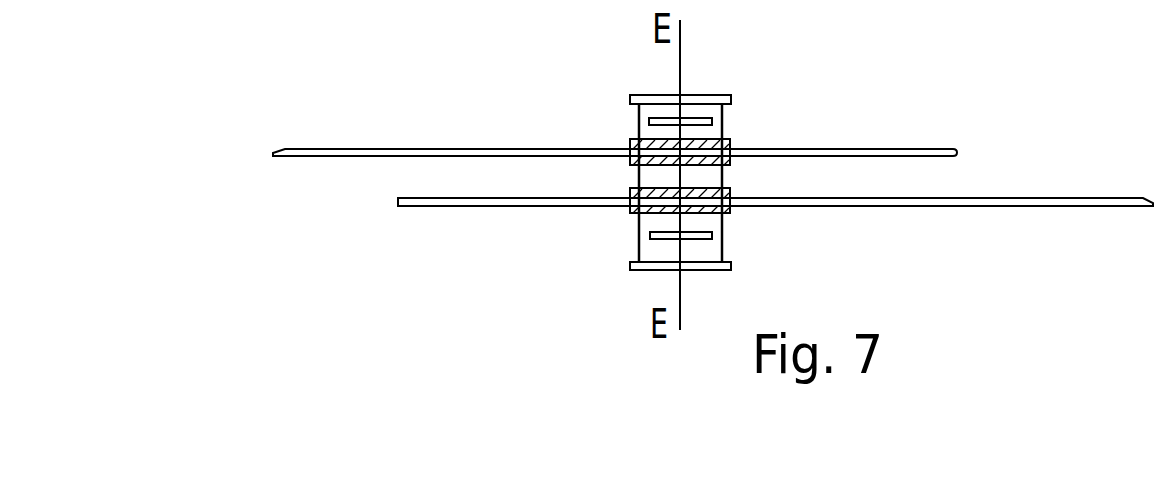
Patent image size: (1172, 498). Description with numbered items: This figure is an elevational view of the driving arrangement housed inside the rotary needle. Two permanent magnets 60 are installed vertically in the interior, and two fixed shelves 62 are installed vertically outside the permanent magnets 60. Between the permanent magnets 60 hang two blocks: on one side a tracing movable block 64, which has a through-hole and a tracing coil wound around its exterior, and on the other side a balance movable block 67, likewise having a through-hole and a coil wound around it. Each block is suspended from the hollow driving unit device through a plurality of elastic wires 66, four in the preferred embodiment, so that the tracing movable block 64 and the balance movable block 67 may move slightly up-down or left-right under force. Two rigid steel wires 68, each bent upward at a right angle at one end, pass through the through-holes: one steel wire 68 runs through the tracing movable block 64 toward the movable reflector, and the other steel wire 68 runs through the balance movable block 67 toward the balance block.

The permanent magnet 60 is at (712, 122).
The fixed shelf 62 is at (720, 97).
The tracing movable block 64 is at (731, 160).
The elastic wire 66 is at (638, 120).
The balance movable block 67 is at (732, 216).
The steel wire 68 is at (935, 150).